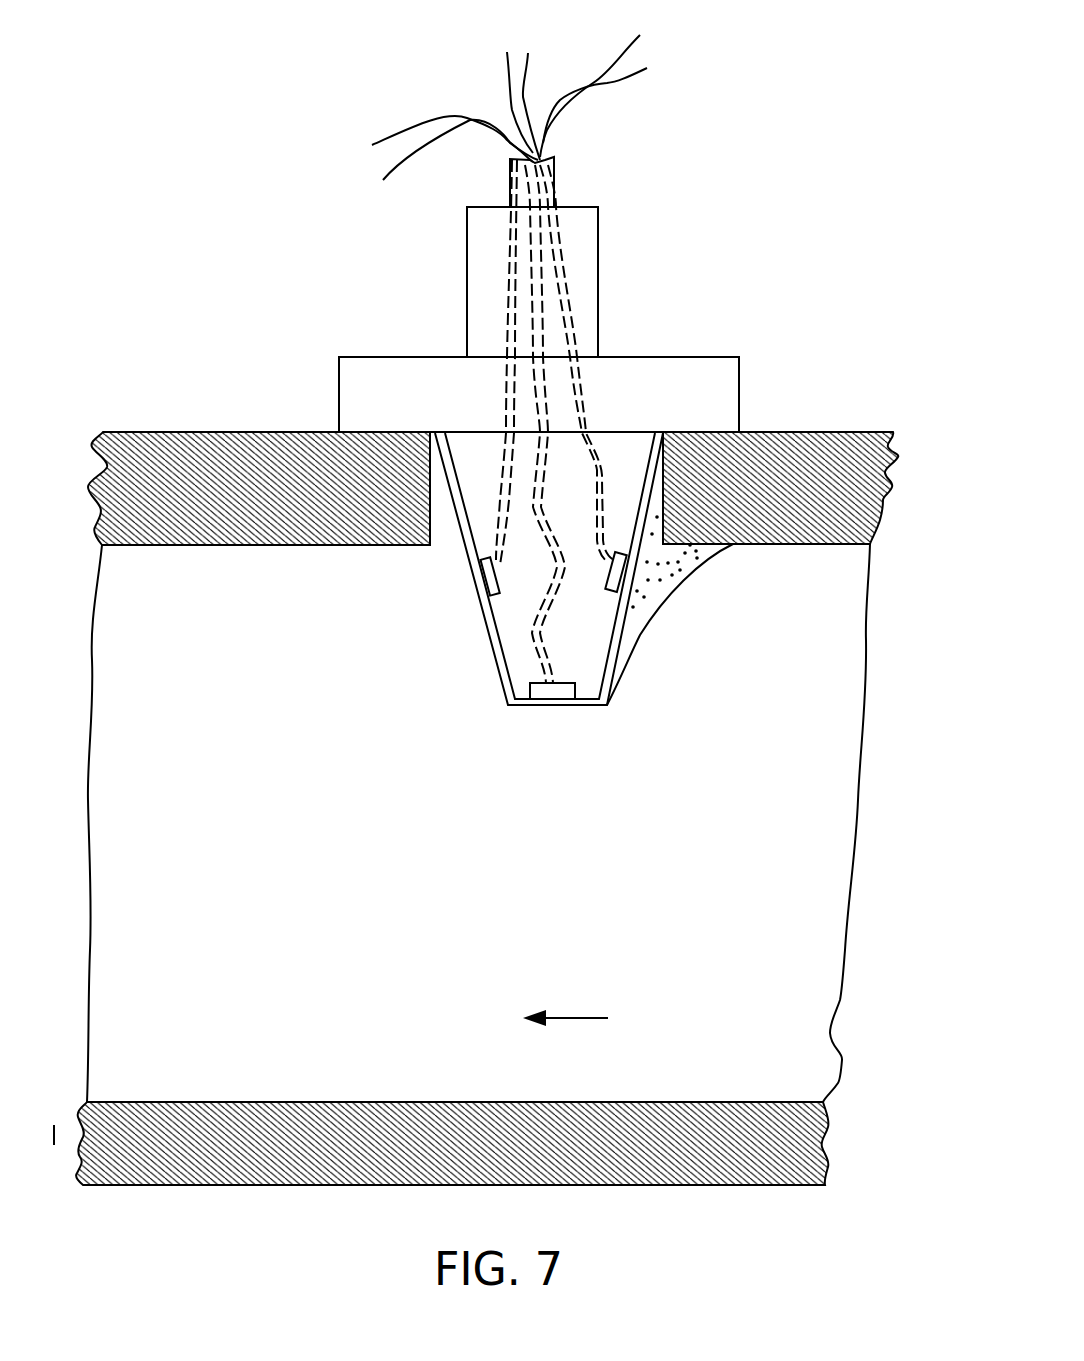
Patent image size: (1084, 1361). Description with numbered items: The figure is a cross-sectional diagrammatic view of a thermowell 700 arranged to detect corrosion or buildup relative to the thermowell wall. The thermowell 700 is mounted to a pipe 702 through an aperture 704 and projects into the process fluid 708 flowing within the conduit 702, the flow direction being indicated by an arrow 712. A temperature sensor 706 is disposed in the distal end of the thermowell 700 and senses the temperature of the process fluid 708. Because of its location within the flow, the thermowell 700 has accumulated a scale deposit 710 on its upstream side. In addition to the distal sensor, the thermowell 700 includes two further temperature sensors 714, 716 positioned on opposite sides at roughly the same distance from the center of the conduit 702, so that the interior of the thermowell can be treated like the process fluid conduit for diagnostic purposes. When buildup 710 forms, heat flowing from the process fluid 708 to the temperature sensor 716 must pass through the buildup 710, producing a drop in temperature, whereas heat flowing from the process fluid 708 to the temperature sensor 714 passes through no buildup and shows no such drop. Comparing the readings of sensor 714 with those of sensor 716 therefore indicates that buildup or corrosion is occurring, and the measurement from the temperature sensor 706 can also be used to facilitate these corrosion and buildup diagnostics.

The thermowell 700 is at (657, 357).
The pipe 702 is at (823, 432).
The aperture 704 is at (432, 522).
The temperature sensor 706 is at (572, 683).
The process fluid 708 is at (509, 856).
The scale deposit 710 is at (670, 572).
The arrow 712 is at (568, 1018).
The temperature sensor 714 is at (488, 602).
The temperature sensor 716 is at (617, 593).